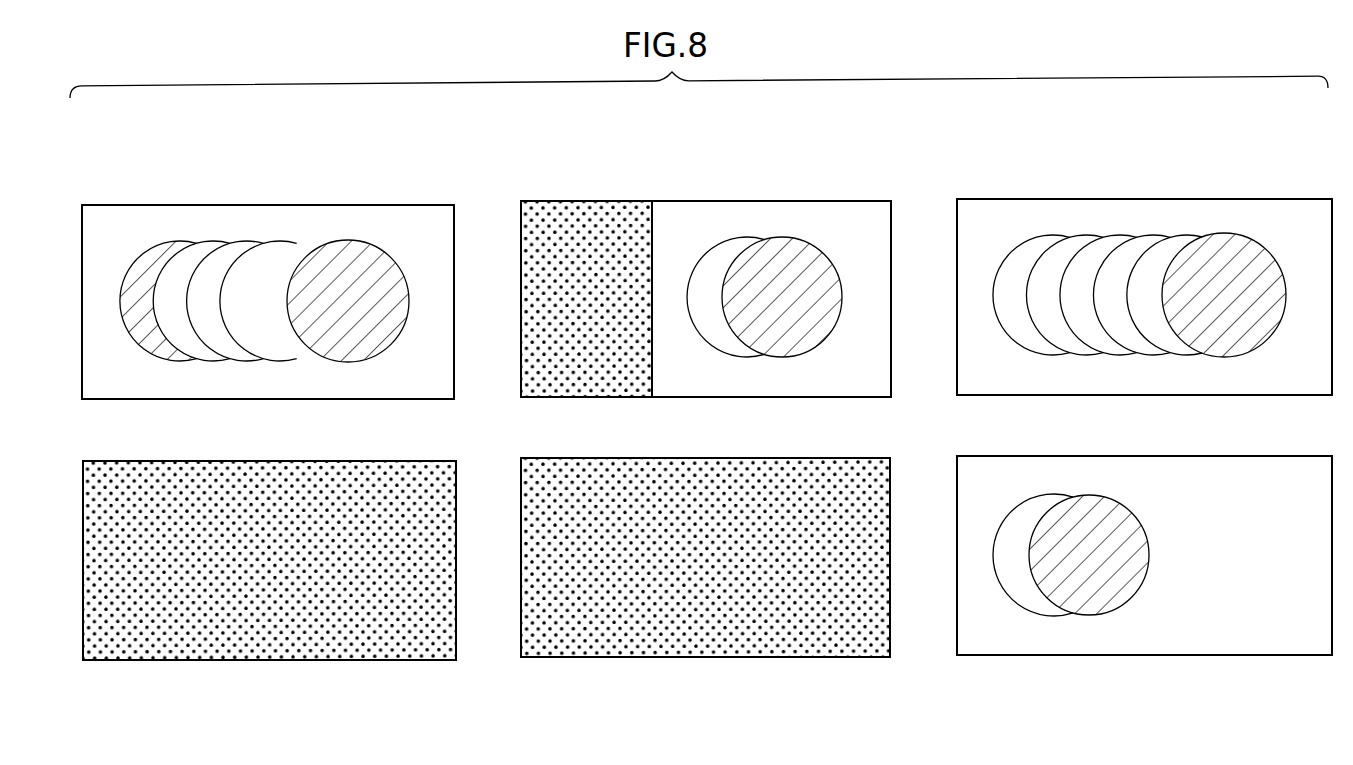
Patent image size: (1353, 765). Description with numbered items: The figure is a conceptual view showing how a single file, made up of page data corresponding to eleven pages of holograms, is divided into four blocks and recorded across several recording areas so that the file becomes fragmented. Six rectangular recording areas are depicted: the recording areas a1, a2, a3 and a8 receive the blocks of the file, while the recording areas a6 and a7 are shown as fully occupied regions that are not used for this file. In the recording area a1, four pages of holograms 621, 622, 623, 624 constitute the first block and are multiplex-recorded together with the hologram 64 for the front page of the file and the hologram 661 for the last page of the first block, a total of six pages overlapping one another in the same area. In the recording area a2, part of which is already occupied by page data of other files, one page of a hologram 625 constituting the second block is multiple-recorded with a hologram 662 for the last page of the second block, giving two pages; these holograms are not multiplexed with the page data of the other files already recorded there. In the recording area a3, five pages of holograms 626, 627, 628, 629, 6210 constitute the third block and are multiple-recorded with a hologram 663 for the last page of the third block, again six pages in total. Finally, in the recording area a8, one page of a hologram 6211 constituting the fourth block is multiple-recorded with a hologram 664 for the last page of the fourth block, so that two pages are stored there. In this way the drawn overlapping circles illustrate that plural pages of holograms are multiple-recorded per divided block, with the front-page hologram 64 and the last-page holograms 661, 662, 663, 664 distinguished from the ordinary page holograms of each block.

The hologram 621 is at (188, 265).
The hologram 622 is at (230, 265).
The hologram 623 is at (255, 263).
The hologram 624 is at (290, 262).
The hologram 625 is at (728, 253).
The hologram 626 is at (1015, 263).
The hologram 627 is at (1060, 262).
The hologram 628 is at (1105, 252).
The hologram 629 is at (1130, 257).
The hologram 6210 is at (1165, 257).
The hologram 6211 is at (1027, 525).
The hologram for the last page of the first block 661 is at (367, 267).
The hologram for the last page of the second block 662 is at (792, 255).
The hologram for the last page of the third block 663 is at (1242, 260).
The hologram for the last page of the fourth block 664 is at (1137, 570).
The hologram for the front page 64 is at (137, 305).
The recording area a1 is at (268, 275).
The recording area a2 is at (706, 275).
The recording area a3 is at (1144, 273).
The recording area a6 is at (269, 538).
The recording area a7 is at (705, 535).
The recording area a8 is at (1144, 534).